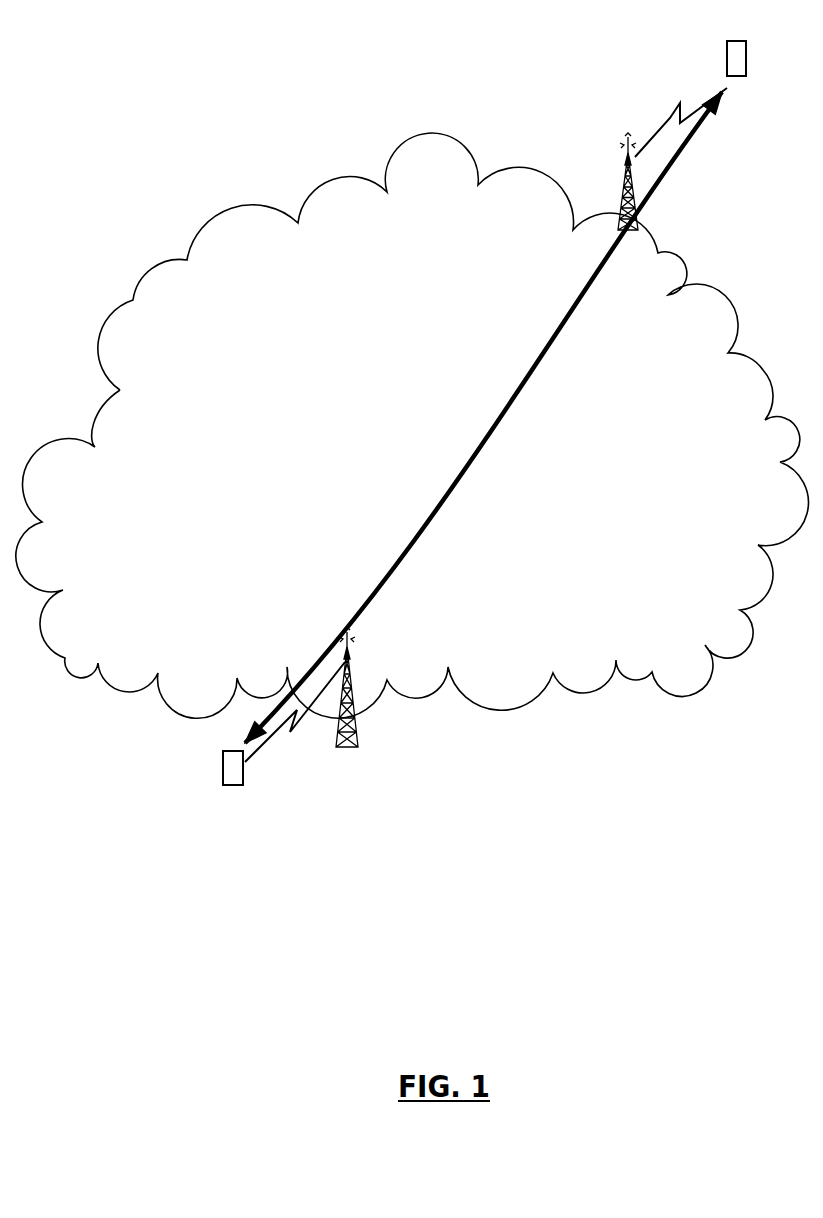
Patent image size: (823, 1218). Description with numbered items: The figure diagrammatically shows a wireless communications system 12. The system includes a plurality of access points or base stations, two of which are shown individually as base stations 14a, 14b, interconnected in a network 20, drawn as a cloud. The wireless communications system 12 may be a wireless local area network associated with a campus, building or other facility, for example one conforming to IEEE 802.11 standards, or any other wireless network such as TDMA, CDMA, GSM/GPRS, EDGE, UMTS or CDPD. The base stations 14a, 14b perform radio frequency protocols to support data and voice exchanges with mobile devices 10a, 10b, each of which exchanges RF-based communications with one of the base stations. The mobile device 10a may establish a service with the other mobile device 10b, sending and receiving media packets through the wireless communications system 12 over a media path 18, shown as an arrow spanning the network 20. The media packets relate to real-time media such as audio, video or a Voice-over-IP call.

The mobile device 10a is at (727, 65).
The mobile device 10b is at (222, 760).
The wireless communications system 12 is at (393, 52).
The base station 14a is at (618, 205).
The base station 14b is at (353, 688).
The media path 18 is at (520, 387).
The network 20 is at (205, 223).